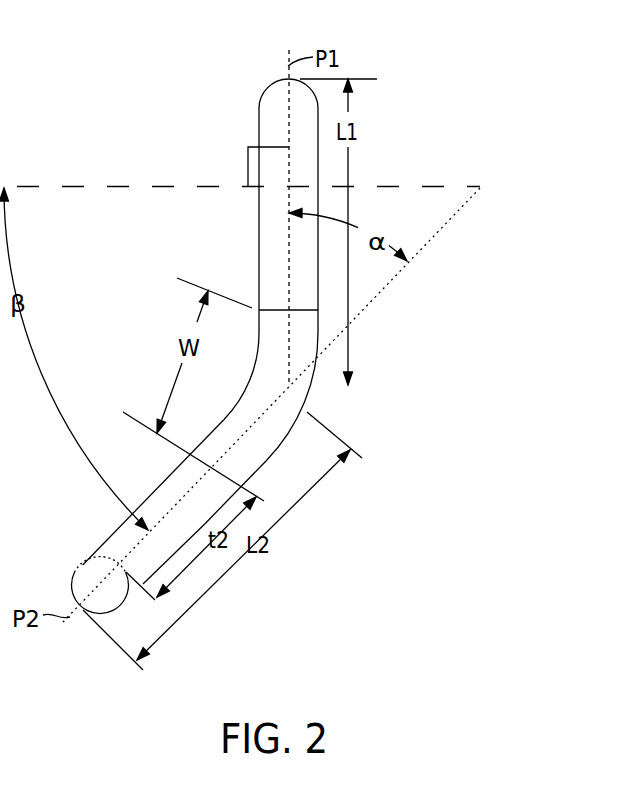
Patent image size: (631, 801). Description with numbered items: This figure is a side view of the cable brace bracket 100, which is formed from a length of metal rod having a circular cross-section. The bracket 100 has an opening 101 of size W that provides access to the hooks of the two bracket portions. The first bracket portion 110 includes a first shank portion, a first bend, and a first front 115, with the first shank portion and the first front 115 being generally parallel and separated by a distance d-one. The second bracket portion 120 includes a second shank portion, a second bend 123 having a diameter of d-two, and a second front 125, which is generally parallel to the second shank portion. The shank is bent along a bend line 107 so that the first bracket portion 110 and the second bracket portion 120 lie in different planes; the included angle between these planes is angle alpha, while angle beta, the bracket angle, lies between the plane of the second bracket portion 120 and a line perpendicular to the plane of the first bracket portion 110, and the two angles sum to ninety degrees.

The cable brace bracket 100 is at (250, 49).
The first bracket portion 110 is at (348, 163).
The first front 115 is at (259, 237).
The opening 101 is at (196, 321).
The bend line 107 is at (243, 393).
The second front 125 is at (118, 526).
The second bracket portion 120 is at (286, 517).
The second bend 123 is at (77, 576).